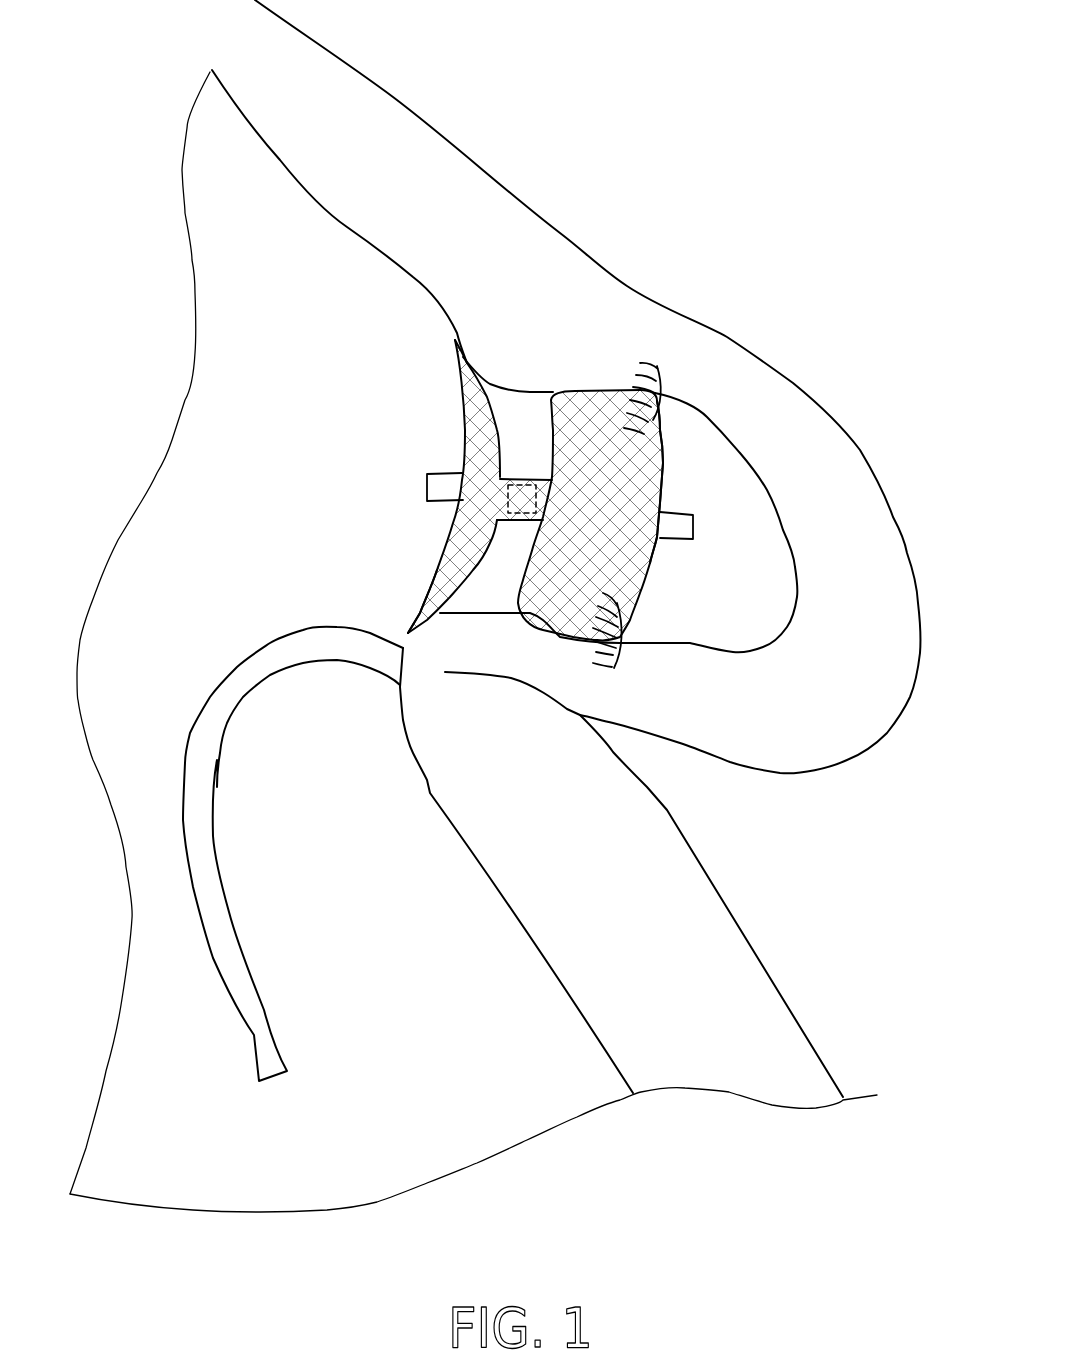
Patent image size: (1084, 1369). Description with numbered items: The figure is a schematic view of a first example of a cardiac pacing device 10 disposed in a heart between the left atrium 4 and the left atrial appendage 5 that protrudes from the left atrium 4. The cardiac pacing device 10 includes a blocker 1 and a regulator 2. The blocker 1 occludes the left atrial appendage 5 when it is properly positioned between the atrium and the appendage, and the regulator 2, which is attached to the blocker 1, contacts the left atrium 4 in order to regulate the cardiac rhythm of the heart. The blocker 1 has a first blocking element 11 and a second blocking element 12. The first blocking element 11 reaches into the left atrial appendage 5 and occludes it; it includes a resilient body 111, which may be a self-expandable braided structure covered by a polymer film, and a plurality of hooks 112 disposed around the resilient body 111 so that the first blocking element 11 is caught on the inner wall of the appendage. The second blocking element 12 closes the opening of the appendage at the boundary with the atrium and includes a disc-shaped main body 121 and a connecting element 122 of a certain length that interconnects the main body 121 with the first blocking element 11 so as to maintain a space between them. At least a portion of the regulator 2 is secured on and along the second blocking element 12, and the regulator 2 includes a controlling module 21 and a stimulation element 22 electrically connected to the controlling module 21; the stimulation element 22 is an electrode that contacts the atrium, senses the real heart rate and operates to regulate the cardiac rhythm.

The blocker 1 is at (530, 423).
The regulator 2 is at (420, 559).
The left atrium 4 is at (289, 257).
The left atrial appendage 5 is at (715, 452).
The cardiac pacing device 10 is at (274, 423).
The first blocking element 11 is at (640, 458).
The second blocking element 12 is at (493, 406).
The controlling module 21 is at (515, 495).
The stimulation element 22 is at (392, 601).
The resilient body 111 is at (660, 487).
The hooks 112 is at (660, 367).
The main body 121 is at (480, 450).
The connecting element 122 is at (527, 477).